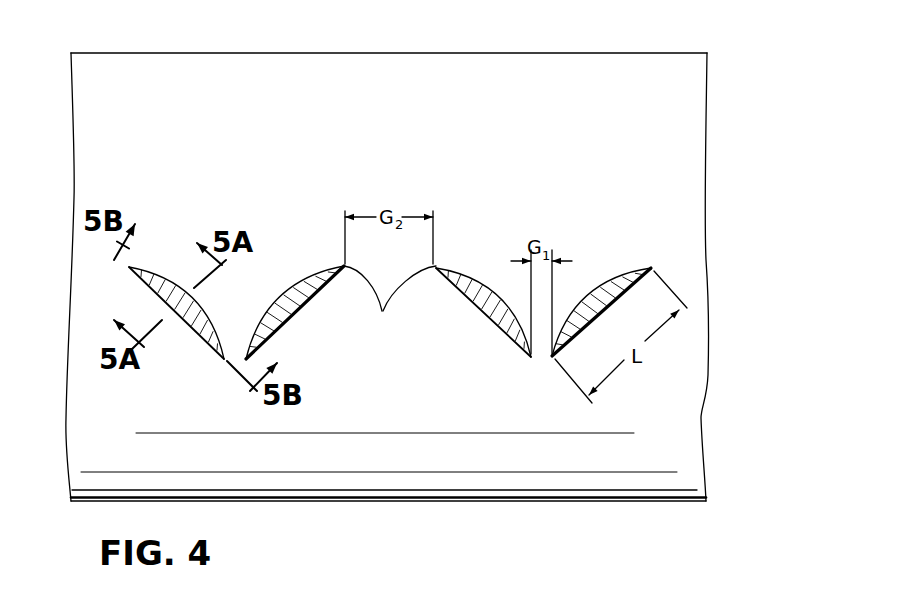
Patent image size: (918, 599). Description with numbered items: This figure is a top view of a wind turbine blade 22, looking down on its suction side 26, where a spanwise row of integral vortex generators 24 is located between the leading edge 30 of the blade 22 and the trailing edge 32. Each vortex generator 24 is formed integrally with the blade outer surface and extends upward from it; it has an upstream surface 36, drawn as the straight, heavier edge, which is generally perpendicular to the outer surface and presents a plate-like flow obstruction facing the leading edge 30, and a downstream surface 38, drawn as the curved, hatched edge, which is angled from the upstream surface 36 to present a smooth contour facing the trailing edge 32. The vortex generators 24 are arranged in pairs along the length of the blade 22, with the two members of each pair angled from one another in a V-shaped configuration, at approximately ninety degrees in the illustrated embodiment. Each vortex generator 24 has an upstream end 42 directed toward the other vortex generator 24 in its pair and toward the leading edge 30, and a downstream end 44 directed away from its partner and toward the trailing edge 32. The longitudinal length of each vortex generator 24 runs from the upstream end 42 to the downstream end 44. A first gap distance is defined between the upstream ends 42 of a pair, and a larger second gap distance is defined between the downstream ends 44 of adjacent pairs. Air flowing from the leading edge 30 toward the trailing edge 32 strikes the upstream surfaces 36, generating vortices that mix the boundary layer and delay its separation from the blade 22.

The wind turbine blade 22 is at (721, 203).
The integral vortex generator 24 is at (149, 266).
The suction side 26 is at (427, 140).
The leading edge 30 is at (498, 504).
The trailing edge 32 is at (362, 53).
The upstream surface 36 is at (197, 338).
The downstream surface 38 is at (172, 295).
The upstream end 42 is at (245, 352).
The downstream end 44 is at (131, 271).